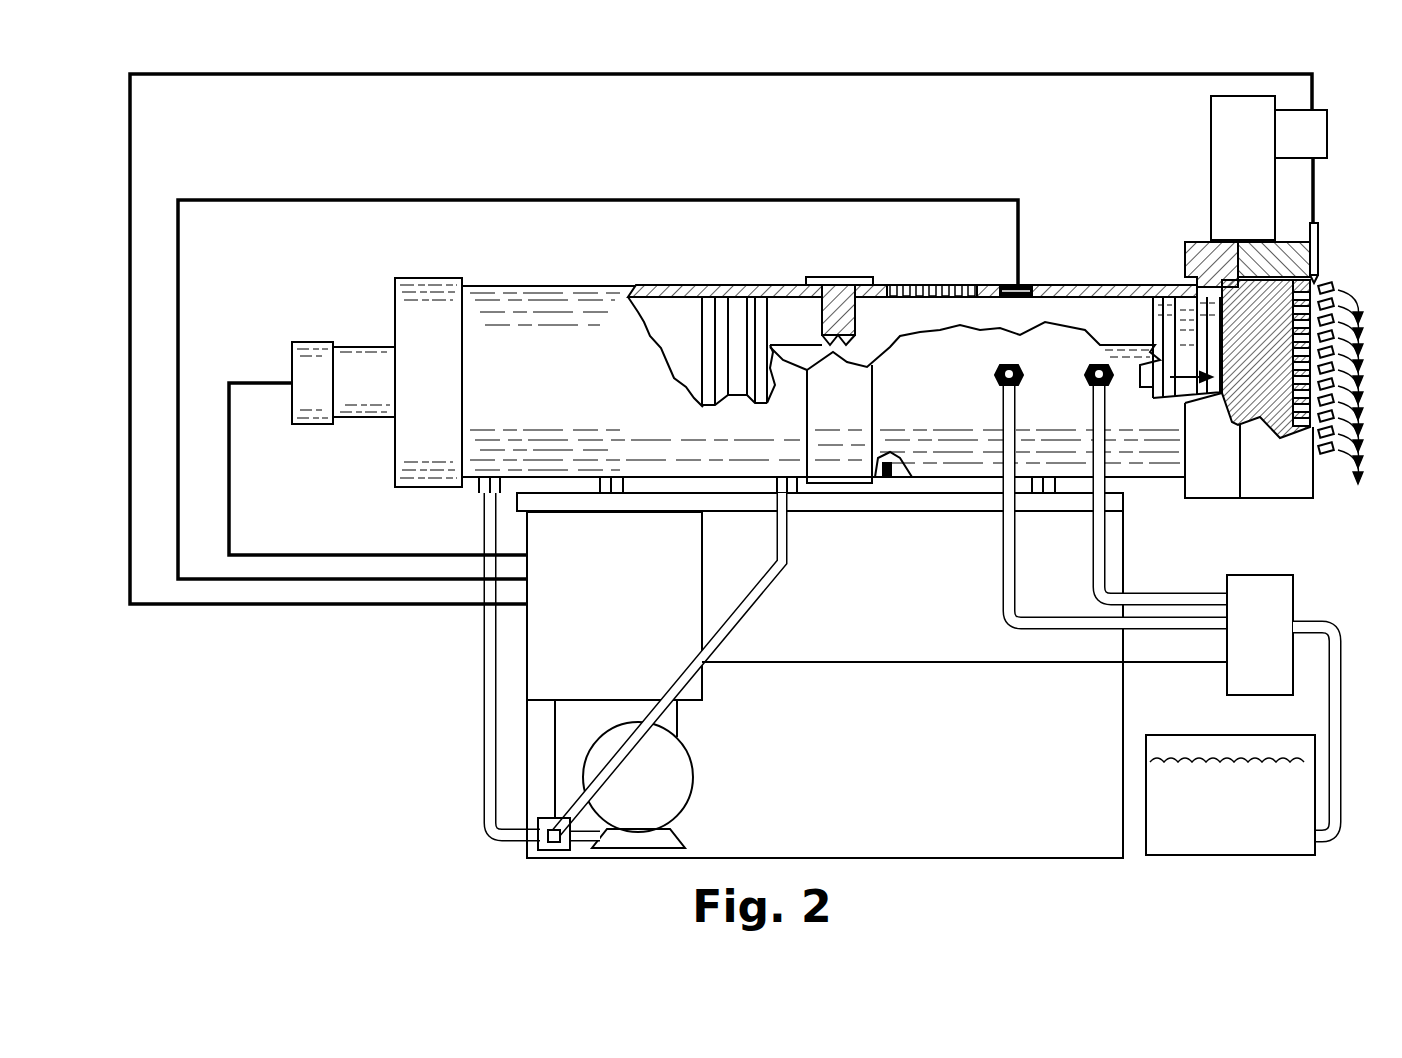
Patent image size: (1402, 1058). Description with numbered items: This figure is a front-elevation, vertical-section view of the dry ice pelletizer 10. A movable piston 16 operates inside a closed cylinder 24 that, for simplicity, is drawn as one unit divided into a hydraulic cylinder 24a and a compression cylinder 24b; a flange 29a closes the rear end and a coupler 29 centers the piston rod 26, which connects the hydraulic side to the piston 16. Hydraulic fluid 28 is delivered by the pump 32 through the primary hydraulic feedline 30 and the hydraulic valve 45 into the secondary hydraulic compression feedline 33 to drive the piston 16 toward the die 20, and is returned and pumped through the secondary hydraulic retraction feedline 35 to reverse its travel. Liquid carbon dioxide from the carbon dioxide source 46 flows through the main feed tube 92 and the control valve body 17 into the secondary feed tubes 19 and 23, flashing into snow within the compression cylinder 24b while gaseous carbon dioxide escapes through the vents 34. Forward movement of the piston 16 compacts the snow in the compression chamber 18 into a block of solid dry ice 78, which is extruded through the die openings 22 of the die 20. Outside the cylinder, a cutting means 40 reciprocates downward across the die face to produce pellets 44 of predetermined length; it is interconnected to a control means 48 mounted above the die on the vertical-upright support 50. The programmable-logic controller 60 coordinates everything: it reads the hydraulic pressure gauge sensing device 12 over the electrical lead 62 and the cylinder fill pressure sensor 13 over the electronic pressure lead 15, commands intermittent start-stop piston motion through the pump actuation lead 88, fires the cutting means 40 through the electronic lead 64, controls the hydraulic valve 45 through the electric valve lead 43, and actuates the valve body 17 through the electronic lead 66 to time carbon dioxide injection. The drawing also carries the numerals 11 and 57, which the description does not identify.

The pelletizer 10 is at (397, 700).
The frame 11 is at (821, 764).
The hydraulic pressure gauge sensing device 12 is at (312, 342).
The cylinder fill pressure sensor 13 is at (1022, 286).
The electronic pressure lead 15 is at (178, 497).
The piston 16 is at (1170, 310).
The control valve body 17 is at (1248, 647).
The compression chamber 18 is at (1258, 244).
The secondary feed tube 19 is at (1108, 562).
The die 20 is at (1192, 243).
The die openings 22 is at (1325, 283).
The secondary feed tube 23 is at (1017, 565).
The cylinder 24 is at (598, 272).
The hydraulic cylinder 24a is at (654, 342).
The compression cylinder 24b is at (862, 332).
The piston rod 26 is at (1130, 343).
The hydraulic fluid 28 is at (785, 312).
The coupler 29 is at (838, 277).
The flange 29a is at (407, 392).
The primary hydraulic feedline 30 is at (583, 848).
The pump 32 is at (621, 795).
The secondary hydraulic compression feedline 33 is at (483, 712).
The vents 34 is at (912, 284).
The secondary hydraulic retraction feedline 35 is at (753, 593).
The cutting means 40 is at (1316, 245).
The electric valve lead 43 is at (557, 757).
The pellets 44 is at (1335, 296).
The hydraulic valve 45 is at (556, 850).
The carbon dioxide source 46 is at (1213, 735).
The control means 48 is at (1289, 150).
The vertical-upright support 50 is at (1231, 170).
The sensor 57 is at (887, 455).
The programmable-logic controller 60 is at (593, 652).
The electrical lead 62 is at (229, 497).
The electronic lead 64 is at (130, 497).
The electronic lead 66 is at (860, 662).
The solid dry ice 78 is at (1250, 367).
The pump actuation lead 88 is at (682, 718).
The main carbon dioxide feed tube 92 is at (1340, 655).